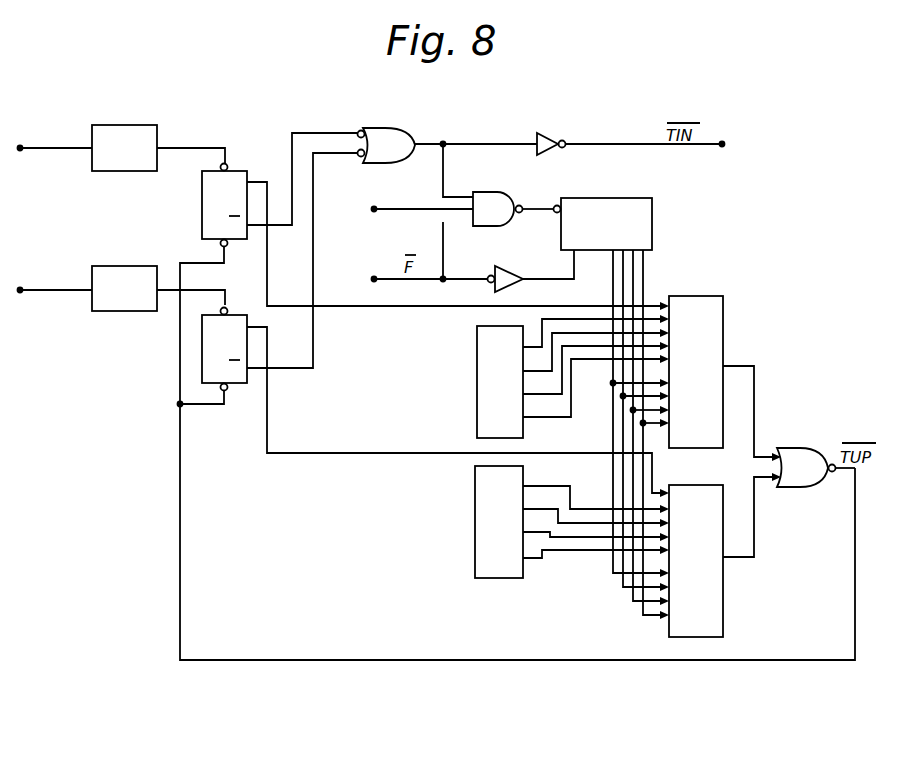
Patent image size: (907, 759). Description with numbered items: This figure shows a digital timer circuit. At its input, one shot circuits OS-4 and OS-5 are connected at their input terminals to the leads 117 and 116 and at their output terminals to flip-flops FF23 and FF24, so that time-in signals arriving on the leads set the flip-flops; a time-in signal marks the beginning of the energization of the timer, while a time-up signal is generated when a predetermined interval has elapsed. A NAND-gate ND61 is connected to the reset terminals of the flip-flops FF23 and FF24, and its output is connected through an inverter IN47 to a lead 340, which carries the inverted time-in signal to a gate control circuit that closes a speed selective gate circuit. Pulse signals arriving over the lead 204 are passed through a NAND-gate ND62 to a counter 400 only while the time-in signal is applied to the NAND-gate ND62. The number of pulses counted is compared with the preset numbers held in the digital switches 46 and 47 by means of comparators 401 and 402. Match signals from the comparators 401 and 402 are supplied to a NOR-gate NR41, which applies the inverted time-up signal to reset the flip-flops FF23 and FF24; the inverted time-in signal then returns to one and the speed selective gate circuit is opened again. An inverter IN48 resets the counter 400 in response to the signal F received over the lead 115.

The lead 117 is at (22, 147).
The lead 116 is at (22, 288).
The one shot circuit OS-4 is at (143, 126).
The one shot circuit OS-5 is at (135, 266).
The flip-flop FF23 is at (239, 169).
The flip-flop FF24 is at (239, 313).
The NAND-gate ND61 is at (422, 119).
The NAND-gate ND62 is at (506, 193).
The inverter IN47 is at (550, 133).
The inverter IN48 is at (522, 260).
The lead 204 is at (375, 208).
The lead 115 is at (375, 278).
The lead 340 is at (723, 142).
The counter 400 is at (641, 191).
The comparator 401 is at (712, 296).
The comparator 402 is at (706, 485).
The digital switch 46 is at (500, 328).
The digital switch 47 is at (523, 468).
The NOR-gate NR41 is at (805, 448).